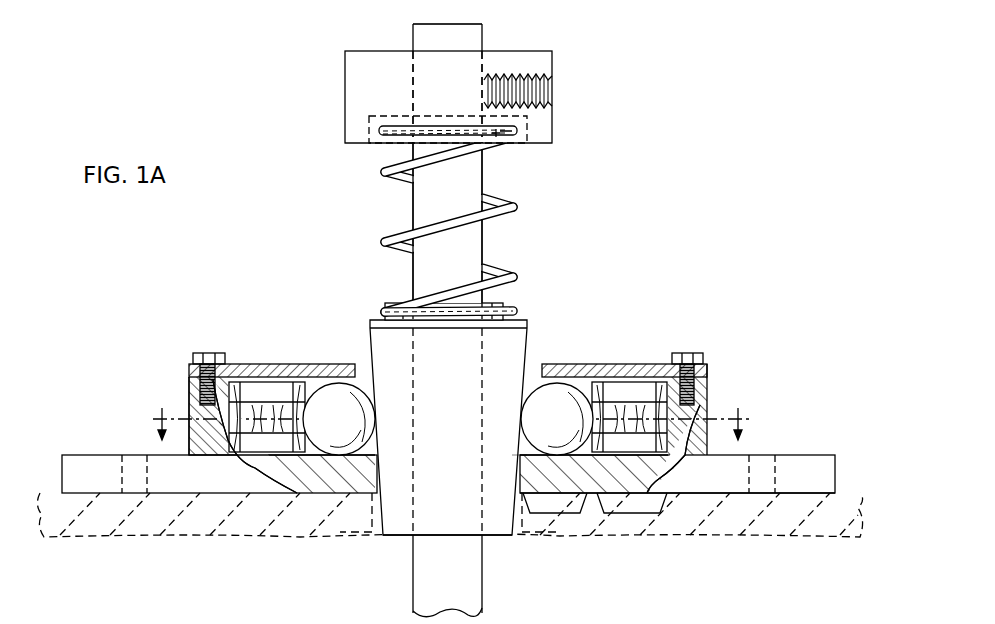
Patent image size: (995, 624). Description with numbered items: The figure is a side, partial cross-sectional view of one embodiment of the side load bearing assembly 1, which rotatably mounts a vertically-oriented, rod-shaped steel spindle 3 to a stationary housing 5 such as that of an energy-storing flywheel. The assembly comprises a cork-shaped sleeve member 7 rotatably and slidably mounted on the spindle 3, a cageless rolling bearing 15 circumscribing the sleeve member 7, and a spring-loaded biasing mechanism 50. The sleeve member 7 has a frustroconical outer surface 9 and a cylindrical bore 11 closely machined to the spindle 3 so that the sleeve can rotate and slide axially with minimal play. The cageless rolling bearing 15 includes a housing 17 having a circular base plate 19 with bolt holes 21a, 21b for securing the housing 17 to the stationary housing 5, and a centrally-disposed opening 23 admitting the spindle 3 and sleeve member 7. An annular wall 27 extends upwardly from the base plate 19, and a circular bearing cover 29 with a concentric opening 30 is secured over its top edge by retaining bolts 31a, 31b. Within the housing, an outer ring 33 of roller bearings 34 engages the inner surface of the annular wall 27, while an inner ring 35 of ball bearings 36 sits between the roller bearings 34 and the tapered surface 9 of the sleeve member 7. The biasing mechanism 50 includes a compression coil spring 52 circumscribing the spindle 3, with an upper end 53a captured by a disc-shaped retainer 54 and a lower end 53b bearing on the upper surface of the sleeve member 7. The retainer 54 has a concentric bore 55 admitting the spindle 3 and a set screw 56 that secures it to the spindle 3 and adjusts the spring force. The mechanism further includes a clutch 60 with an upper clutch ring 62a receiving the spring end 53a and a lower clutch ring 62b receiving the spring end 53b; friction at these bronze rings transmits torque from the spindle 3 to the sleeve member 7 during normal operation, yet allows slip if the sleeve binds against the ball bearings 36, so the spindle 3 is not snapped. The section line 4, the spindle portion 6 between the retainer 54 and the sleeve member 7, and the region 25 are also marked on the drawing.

The side load bearing assembly 1 is at (255, 72).
The spindle 3 is at (438, 586).
The section line 4 is at (451, 422).
The housing 5 is at (221, 527).
The shaft 6 is at (473, 235).
The sleeve member 7 is at (434, 386).
The frustroconical outer surface 9 is at (382, 337).
The cylindrical bore 11 is at (418, 515).
The cageless rolling bearing 15 is at (186, 353).
The housing 17 is at (795, 453).
The circular base plate 19 is at (703, 485).
The bolt hole 21a is at (127, 494).
The bolt hole 21b is at (765, 494).
The centrally-disposed opening 23 is at (355, 475).
The clearance / contact zone 25 is at (525, 430).
The annular wall 27 is at (700, 410).
The circular bearing cover 29 is at (270, 363).
The opening 30 is at (534, 378).
The retaining bolt 31a is at (209, 352).
The retaining bolt 31b is at (690, 352).
The outer ring 33 is at (630, 514).
The roller bearing 34 is at (633, 385).
The inner ring 35 is at (553, 514).
The ball bearing 36 is at (567, 395).
The spring-loaded biasing mechanism 50 is at (583, 134).
The compression coil spring 52 is at (395, 242).
The upper end 53a is at (498, 137).
The lower end 53b is at (505, 311).
The disc-shaped retainer 54 is at (368, 80).
The bore 55 is at (415, 92).
The set screw 56 is at (547, 72).
The clutch 60 is at (372, 147).
The upper clutch ring 62a is at (368, 128).
The lower clutch ring 62b is at (393, 311).